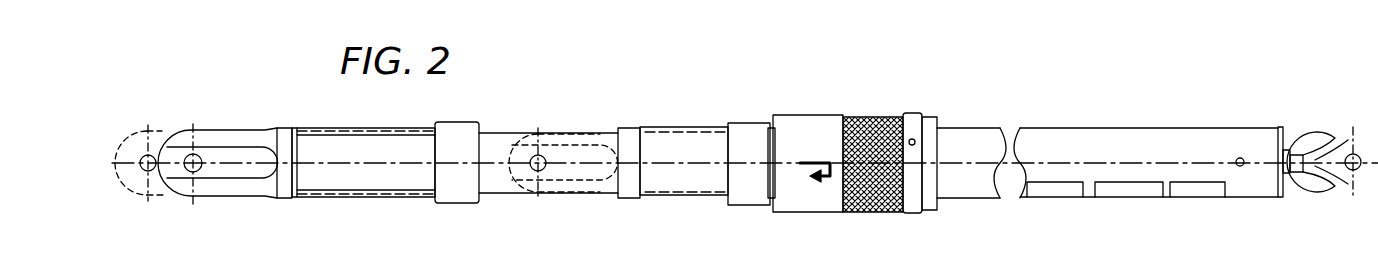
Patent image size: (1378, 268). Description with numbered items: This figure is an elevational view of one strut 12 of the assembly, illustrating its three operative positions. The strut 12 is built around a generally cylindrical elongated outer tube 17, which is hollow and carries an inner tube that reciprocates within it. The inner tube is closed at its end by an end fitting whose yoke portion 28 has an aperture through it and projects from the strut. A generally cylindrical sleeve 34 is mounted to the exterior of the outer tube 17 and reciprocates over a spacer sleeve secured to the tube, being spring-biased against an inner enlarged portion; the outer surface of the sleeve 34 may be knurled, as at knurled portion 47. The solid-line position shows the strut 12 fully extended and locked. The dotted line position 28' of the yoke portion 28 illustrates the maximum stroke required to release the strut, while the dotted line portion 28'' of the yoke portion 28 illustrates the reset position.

The strut 12 is at (668, 222).
The outer tube 17 is at (1110, 128).
The yoke portion 28 is at (225, 145).
The dotted line position of yoke portion 28' is at (141, 140).
The dotted line portion of yoke portion 28'' is at (557, 193).
The sleeve 34 is at (805, 133).
The knurled portion 47 is at (876, 128).